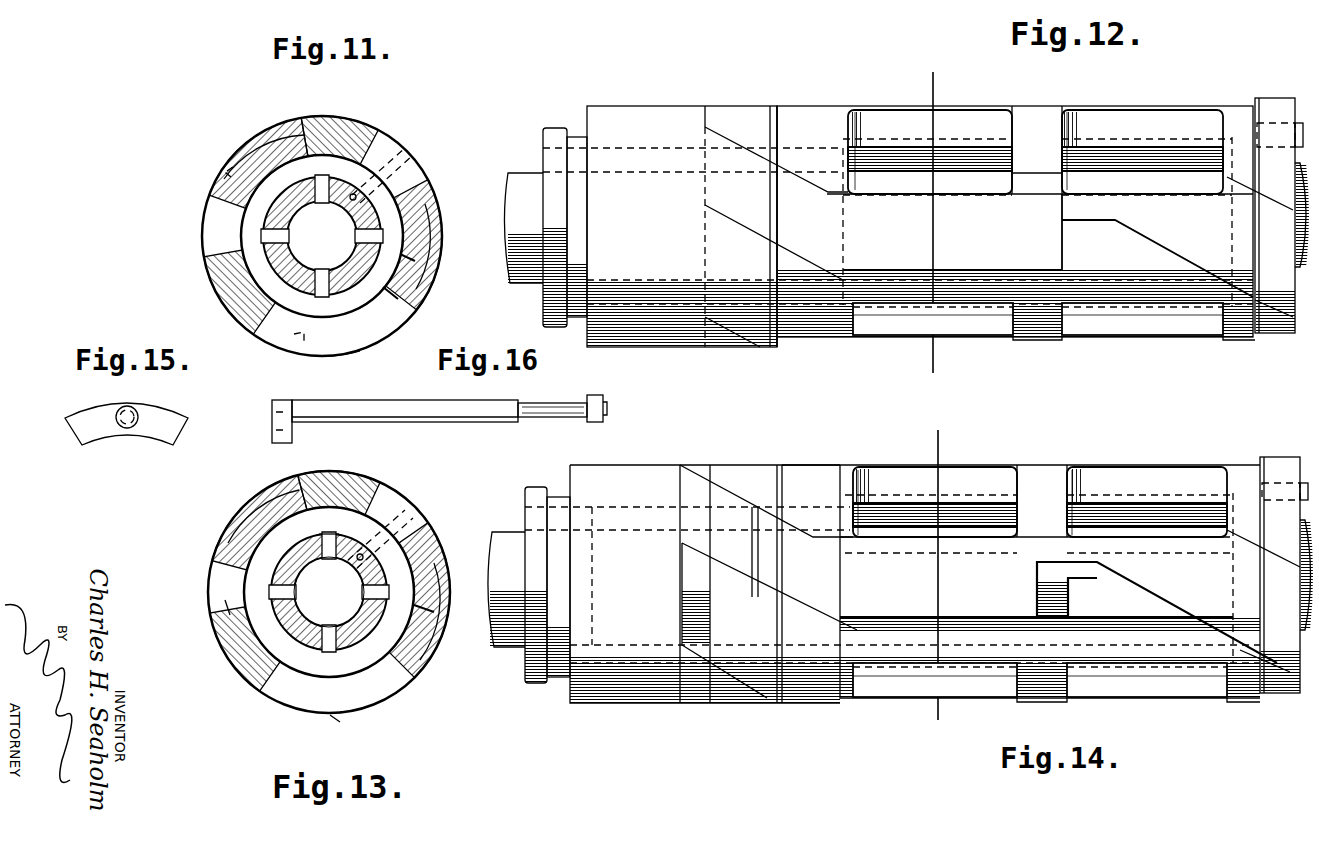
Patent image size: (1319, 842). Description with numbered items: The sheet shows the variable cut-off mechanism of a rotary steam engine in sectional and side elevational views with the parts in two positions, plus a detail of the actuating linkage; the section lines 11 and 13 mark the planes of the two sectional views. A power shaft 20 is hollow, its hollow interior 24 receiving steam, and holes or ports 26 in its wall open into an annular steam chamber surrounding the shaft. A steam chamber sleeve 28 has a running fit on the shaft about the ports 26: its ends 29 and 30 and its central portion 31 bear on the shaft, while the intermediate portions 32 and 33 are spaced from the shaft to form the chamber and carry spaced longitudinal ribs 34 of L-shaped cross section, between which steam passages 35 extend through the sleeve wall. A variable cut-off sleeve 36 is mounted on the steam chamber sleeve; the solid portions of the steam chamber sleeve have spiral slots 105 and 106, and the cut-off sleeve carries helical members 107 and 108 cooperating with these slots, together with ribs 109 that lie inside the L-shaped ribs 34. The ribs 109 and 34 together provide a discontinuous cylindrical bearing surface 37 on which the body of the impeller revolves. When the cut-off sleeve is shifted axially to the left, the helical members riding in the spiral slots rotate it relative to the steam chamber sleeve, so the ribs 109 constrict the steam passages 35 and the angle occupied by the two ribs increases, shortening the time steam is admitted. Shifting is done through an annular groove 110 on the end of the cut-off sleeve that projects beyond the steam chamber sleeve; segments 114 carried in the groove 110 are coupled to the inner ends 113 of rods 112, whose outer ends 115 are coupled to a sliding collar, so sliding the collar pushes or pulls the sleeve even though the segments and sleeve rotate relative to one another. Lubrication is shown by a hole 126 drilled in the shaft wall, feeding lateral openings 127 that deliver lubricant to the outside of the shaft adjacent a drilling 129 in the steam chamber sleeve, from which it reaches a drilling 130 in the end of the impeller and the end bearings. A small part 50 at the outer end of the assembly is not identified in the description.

In FIG. 12, the section line 11- 11 is at (934, 216).
In FIG. 14, the section line 13- 13 is at (939, 573).
In FIG. 11, the power shaft 20 is at (268, 208).
In FIG. 13, the power shaft 20 is at (362, 636).
In FIG. 12, the power shaft 20 is at (530, 178).
In FIG. 14, the power shaft 20 is at (514, 538).
In FIG. 13, the hollow interior of shaft 24 is at (329, 592).
In FIG. 11, the holes or ports 26 is at (322, 236).
In FIG. 13, the holes or ports 26 is at (322, 652).
In FIG. 11, the steam chamber sleeve 28 is at (345, 122).
In FIG. 13, the steam chamber sleeve 28 is at (343, 478).
In FIG. 12, the steam chamber sleeve 28 is at (1015, 221).
In FIG. 14, the steam chamber sleeve 28 is at (1021, 479).
In FIG. 12, the end of steam chamber sleeve 29 is at (1260, 336).
In FIG. 14, the end of steam chamber sleeve 29 is at (1283, 698).
In FIG. 14, the end of steam chamber sleeve 30 is at (822, 525).
In FIG. 12, the central portion of steam chamber sleeve 31 is at (1040, 114).
In FIG. 14, the central portion of steam chamber sleeve 31 is at (1040, 466).
In FIG. 12, the intermediate portion of steam chamber sleeve 32 is at (973, 112).
In FIG. 14, the intermediate portion of steam chamber sleeve 32 is at (980, 465).
In FIG. 12, the intermediate portion of steam chamber sleeve 33 is at (1185, 115).
In FIG. 14, the intermediate portion of steam chamber sleeve 33 is at (1163, 467).
In FIG. 11, the longitudinal ribs 34 is at (352, 148).
In FIG. 13, the longitudinal ribs 34 is at (373, 506).
In FIG. 12, the longitudinal ribs 34 is at (998, 150).
In FIG. 14, the longitudinal ribs 34 is at (992, 501).
In FIG. 11, the steam passages 35 is at (348, 342).
In FIG. 13, the steam passages 35 is at (372, 695).
In FIG. 12, the steam passages 35 is at (930, 177).
In FIG. 12, the variable cut-off sleeve 36 is at (898, 226).
In FIG. 14, the variable cut-off sleeve 36 is at (892, 584).
In FIG. 11, the cylindrical outer bearing surface 37 is at (440, 228).
In FIG. 13, the cylindrical outer bearing surface 37 is at (363, 492).
In FIG. 14, the cylindrical outer bearing surface 37 is at (1118, 612).
In FIG. 12, the pin 50 is at (1277, 122).
In FIG. 14, the pin 50 is at (1303, 482).
In FIG. 12, the spiral slot 105 is at (780, 167).
In FIG. 14, the spiral slot 105 is at (725, 500).
In FIG. 12, the spiral slot 106 is at (1245, 180).
In FIG. 14, the spiral slot 106 is at (1290, 555).
In FIG. 12, the helical member 107 is at (1024, 208).
In FIG. 14, the helical member 107 is at (1005, 583).
In FIG. 12, the helical member 108 is at (1284, 215).
In FIG. 14, the helical member 108 is at (1276, 575).
In FIG. 11, the ribs of cut-off sleeve 109 is at (283, 124).
In FIG. 13, the ribs of cut-off sleeve 109 is at (263, 497).
In FIG. 12, the ribs of cut-off sleeve 109 is at (1048, 245).
In FIG. 12, the annular groove 110 is at (570, 128).
In FIG. 14, the annular groove 110 is at (555, 687).
In FIG. 16, the rods 112 is at (425, 403).
In FIG. 16, the inner ends of rods 113 is at (292, 405).
In FIG. 15, the segments 114 is at (157, 418).
In FIG. 16, the outer ends of rods 115 is at (560, 400).
In FIG. 11, the hole 126 is at (357, 198).
In FIG. 13, the hole 126 is at (357, 560).
In FIG. 13, the lateral openings 127 is at (338, 522).
In FIG. 12, the drilling in steam chamber sleeve 129 is at (1250, 100).
In FIG. 14, the drilling in steam chamber sleeve 129 is at (1258, 470).
In FIG. 11, the drilling in impeller end 130 is at (420, 160).
In FIG. 13, the drilling in impeller end 130 is at (420, 510).
In FIG. 12, the drilling in impeller end 130 is at (780, 107).
In FIG. 14, the drilling in impeller end 130 is at (778, 465).